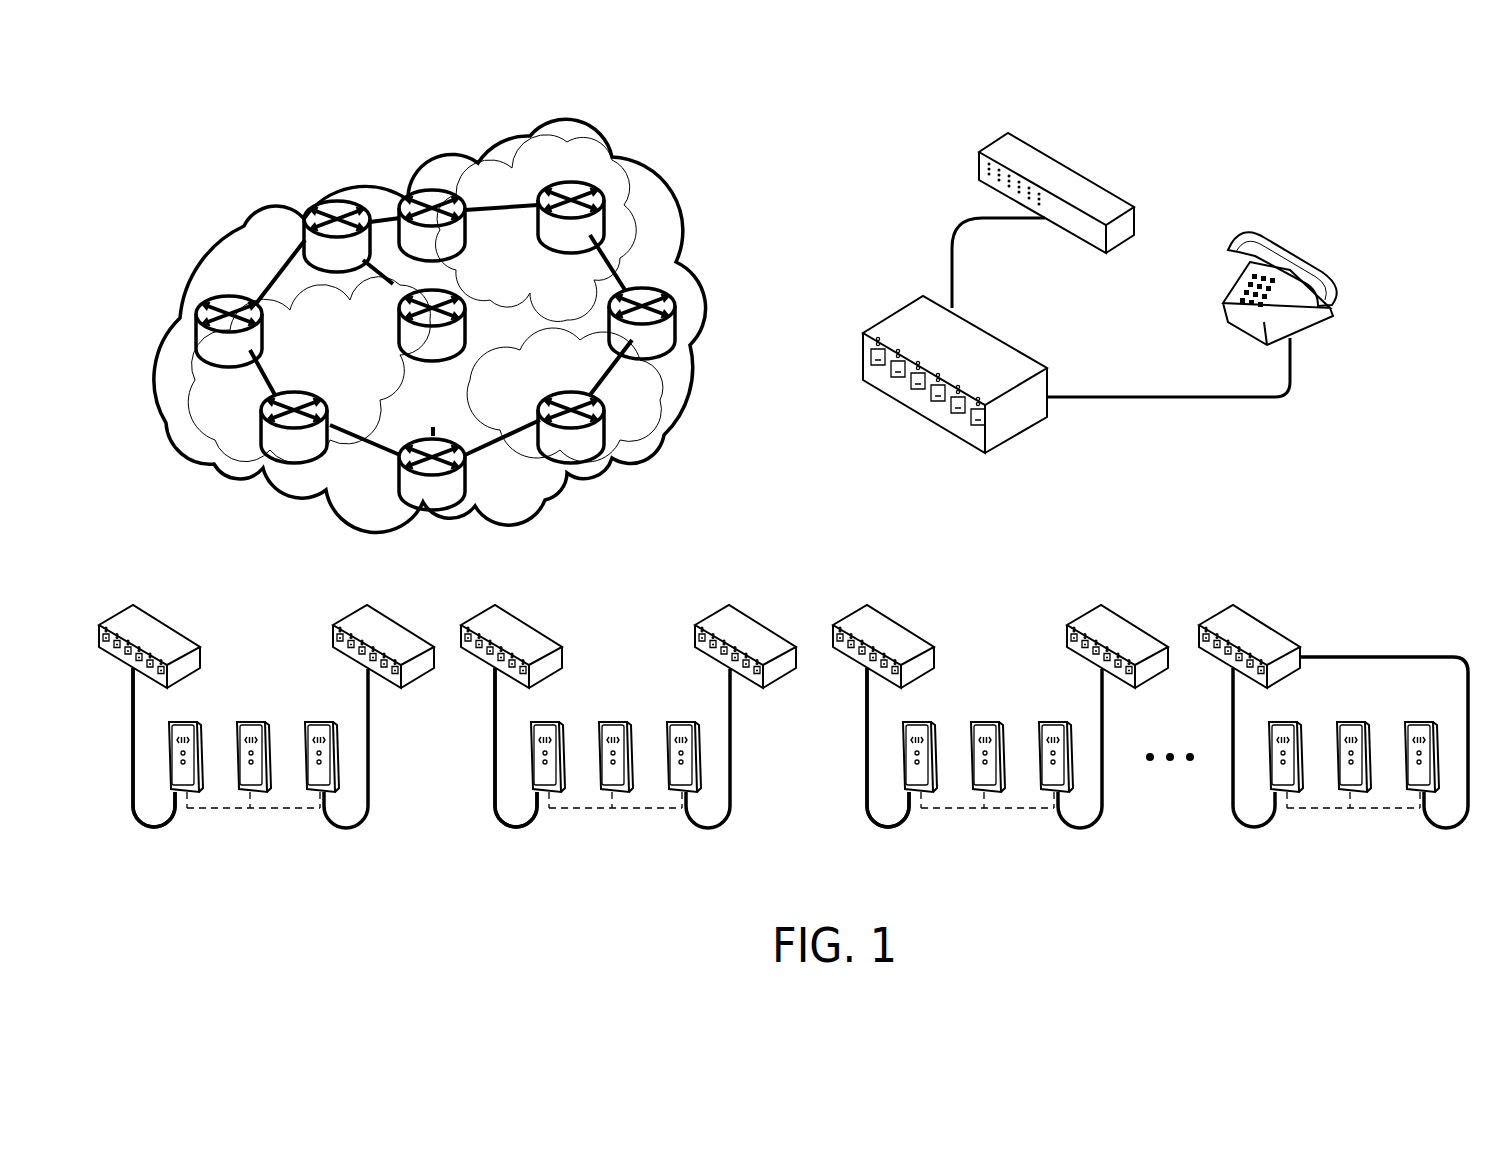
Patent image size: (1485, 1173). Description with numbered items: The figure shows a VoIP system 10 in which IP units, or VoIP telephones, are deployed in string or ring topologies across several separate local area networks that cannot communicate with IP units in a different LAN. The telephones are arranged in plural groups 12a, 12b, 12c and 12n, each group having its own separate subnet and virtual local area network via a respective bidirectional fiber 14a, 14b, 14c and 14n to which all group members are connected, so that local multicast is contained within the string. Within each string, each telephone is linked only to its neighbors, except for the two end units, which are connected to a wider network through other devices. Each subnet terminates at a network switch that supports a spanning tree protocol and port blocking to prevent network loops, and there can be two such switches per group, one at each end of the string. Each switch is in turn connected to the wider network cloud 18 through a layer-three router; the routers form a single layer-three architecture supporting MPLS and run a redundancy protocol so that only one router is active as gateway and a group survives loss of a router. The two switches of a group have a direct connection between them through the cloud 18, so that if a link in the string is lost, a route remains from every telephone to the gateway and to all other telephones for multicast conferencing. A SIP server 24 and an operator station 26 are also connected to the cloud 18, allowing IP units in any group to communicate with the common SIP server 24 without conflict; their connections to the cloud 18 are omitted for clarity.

The VoIP system 10 is at (193, 156).
The group of IP units 12a is at (264, 739).
The group of IP units 12b is at (626, 739).
The group of IP units 12c is at (998, 739).
The group of IP units 12n is at (1331, 738).
The fiber 14a is at (133, 806).
The fiber 14b is at (497, 776).
The fiber 14c is at (869, 776).
The fiber 14n is at (1235, 776).
The network cloud 18 is at (675, 443).
The SIP server 24 is at (1077, 172).
The operator station 26 is at (1298, 252).